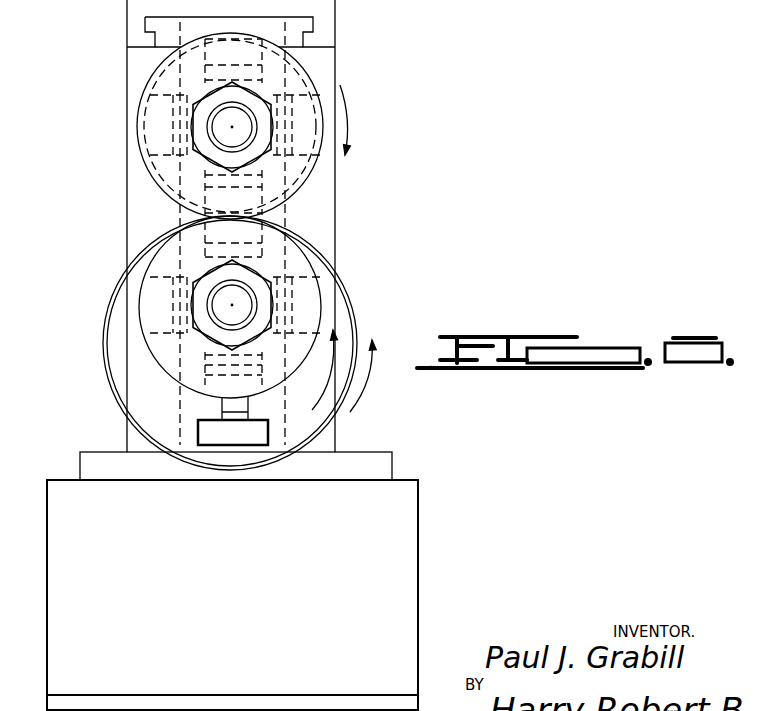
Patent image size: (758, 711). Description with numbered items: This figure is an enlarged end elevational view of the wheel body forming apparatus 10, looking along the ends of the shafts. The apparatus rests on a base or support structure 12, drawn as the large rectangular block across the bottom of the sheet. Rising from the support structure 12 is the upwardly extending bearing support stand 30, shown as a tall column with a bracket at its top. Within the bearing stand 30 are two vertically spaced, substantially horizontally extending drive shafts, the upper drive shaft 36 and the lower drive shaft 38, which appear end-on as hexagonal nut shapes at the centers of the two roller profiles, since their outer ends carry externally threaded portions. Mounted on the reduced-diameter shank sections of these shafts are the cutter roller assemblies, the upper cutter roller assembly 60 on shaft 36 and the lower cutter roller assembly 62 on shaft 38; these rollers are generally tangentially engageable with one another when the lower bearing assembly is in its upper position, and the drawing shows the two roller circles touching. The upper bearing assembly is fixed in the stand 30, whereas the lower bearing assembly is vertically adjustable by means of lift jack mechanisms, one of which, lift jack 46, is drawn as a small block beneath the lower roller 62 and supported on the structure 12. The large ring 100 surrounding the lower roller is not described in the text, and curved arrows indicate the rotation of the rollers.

The wheel body forming apparatus 10 is at (118, 195).
The base or support structure 12 is at (421, 508).
The bearing support stand 30 is at (128, 62).
The drive shaft 36 is at (242, 118).
The drive shaft 38 is at (242, 297).
The lift jack mechanism 46 is at (197, 428).
The cutter roller assembly 60 is at (322, 166).
The cutter roller assembly 62 is at (150, 342).
The ring / band 100 is at (357, 320).